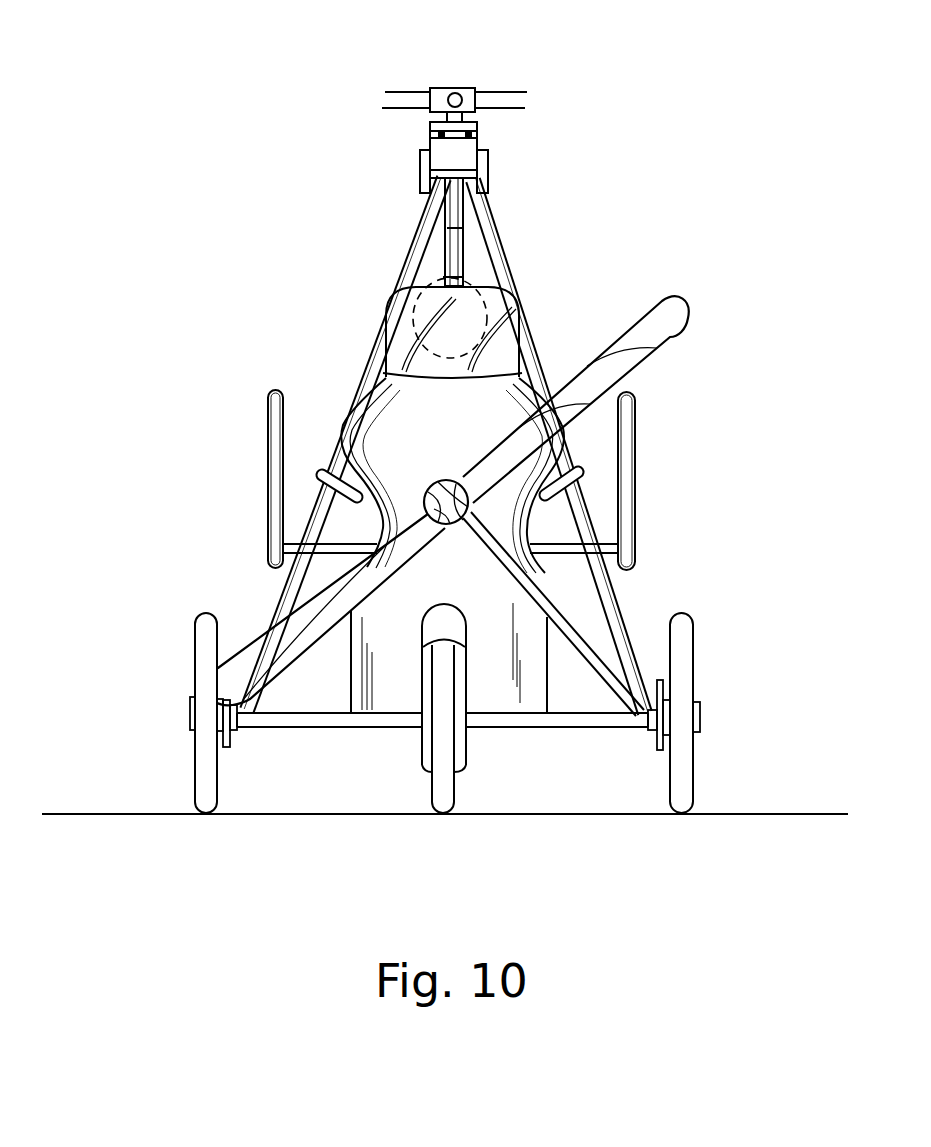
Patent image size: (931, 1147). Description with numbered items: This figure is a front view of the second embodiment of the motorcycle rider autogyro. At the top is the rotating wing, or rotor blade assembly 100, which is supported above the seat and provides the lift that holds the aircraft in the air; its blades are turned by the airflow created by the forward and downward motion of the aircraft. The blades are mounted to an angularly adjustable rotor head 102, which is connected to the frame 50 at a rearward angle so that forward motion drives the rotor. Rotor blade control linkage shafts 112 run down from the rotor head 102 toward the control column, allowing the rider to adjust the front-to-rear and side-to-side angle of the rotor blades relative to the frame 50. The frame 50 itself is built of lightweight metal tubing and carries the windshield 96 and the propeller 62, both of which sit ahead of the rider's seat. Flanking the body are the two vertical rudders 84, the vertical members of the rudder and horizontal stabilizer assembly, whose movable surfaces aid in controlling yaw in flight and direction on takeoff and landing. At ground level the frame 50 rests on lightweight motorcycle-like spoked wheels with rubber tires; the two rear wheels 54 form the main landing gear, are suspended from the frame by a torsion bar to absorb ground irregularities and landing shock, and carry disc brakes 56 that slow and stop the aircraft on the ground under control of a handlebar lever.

The frame 50 is at (420, 240).
The rear wheels 54 is at (205, 770).
The disc brakes 56 is at (226, 748).
The propeller 62 is at (668, 310).
The rudders 84 is at (268, 468).
The windshield 96 is at (377, 417).
The rotor blade assembly 100 is at (513, 92).
The rotor head 102 is at (455, 93).
The rotor blade control linkage shafts 112 is at (445, 258).